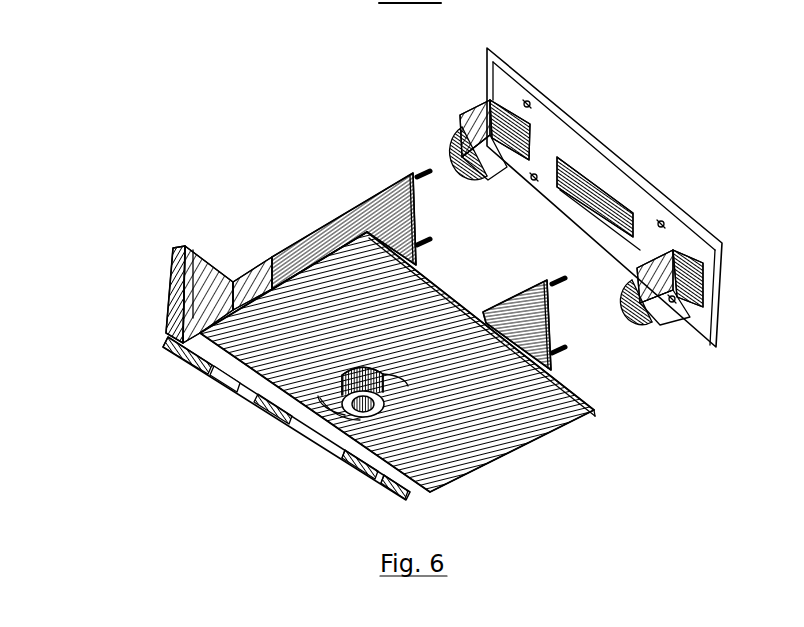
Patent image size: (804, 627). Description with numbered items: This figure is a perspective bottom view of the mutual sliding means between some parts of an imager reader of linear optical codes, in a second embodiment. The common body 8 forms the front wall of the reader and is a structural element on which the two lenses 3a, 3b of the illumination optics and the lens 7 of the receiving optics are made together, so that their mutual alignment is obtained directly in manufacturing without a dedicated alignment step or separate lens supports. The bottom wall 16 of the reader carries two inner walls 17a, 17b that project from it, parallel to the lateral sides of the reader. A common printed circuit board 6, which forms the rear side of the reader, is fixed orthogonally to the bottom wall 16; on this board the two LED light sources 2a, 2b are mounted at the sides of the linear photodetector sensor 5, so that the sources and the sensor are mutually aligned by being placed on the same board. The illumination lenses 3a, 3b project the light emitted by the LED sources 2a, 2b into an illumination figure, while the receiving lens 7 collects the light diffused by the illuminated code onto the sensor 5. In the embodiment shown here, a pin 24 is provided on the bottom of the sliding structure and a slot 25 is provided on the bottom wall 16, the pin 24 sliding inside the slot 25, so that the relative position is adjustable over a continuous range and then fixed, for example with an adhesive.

The common body 8 is at (342, 323).
The bottom wall 16 is at (550, 425).
The inner wall 17a is at (392, 200).
The inner wall 17b is at (557, 328).
The lens 3a is at (170, 345).
The lens 3b is at (377, 480).
The lens of the receiving optics 7 is at (280, 410).
The slot 25 is at (317, 398).
The pin 24 is at (357, 420).
The printed circuit board 6 is at (572, 193).
The LED light source 2a is at (467, 113).
The LED light source 2b is at (650, 323).
The linear photodetector device or sensor 5 is at (593, 170).